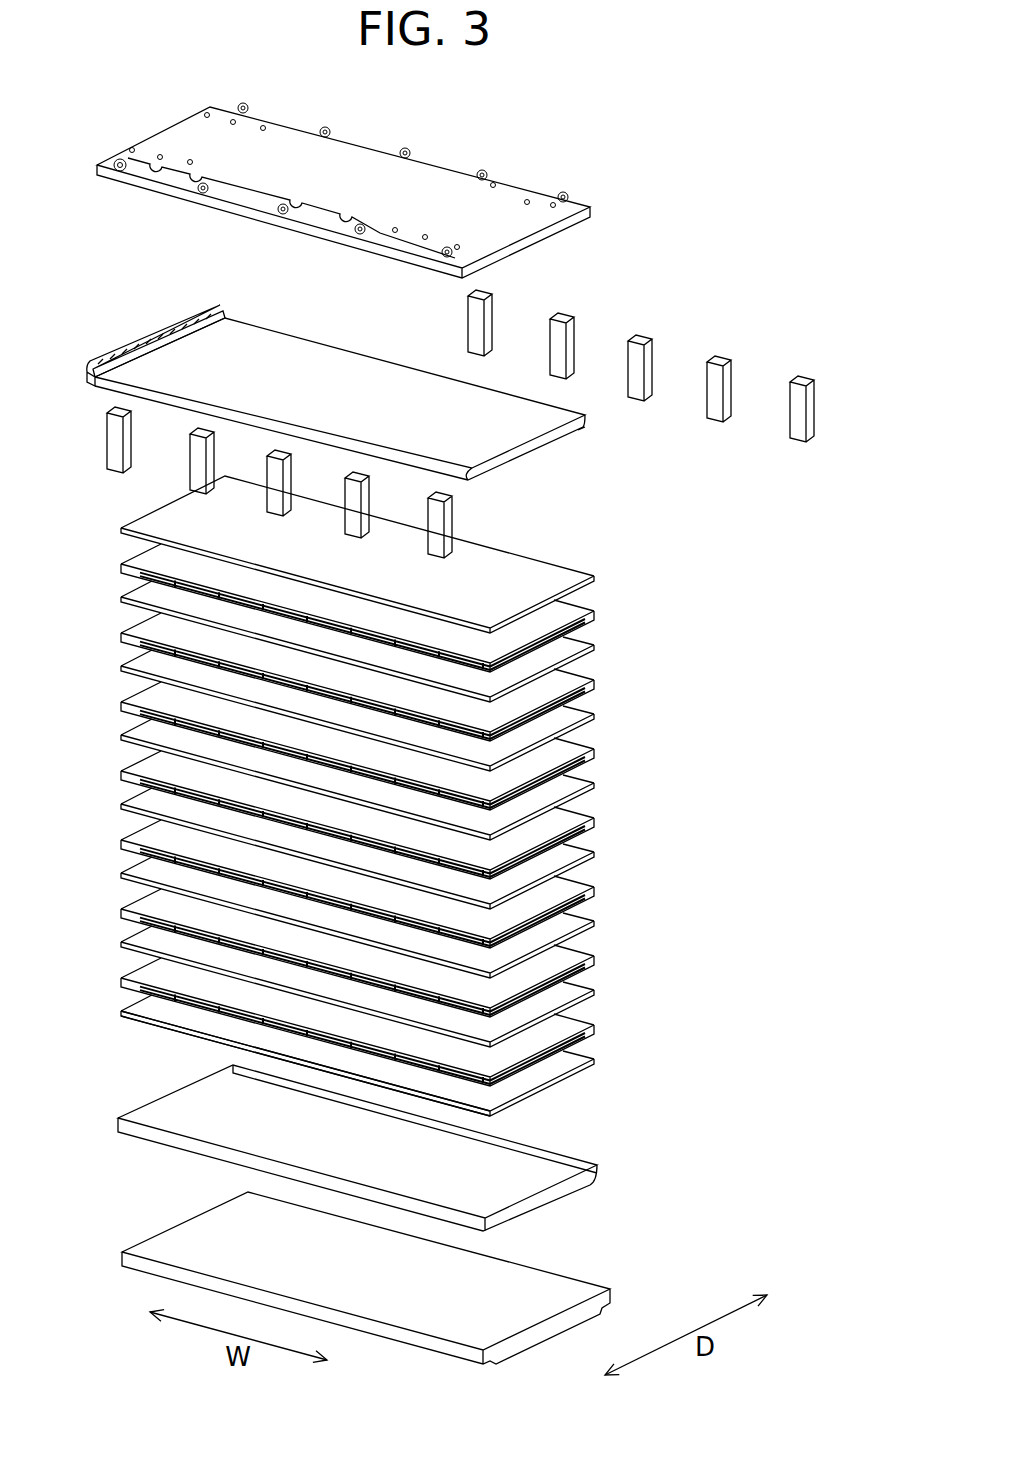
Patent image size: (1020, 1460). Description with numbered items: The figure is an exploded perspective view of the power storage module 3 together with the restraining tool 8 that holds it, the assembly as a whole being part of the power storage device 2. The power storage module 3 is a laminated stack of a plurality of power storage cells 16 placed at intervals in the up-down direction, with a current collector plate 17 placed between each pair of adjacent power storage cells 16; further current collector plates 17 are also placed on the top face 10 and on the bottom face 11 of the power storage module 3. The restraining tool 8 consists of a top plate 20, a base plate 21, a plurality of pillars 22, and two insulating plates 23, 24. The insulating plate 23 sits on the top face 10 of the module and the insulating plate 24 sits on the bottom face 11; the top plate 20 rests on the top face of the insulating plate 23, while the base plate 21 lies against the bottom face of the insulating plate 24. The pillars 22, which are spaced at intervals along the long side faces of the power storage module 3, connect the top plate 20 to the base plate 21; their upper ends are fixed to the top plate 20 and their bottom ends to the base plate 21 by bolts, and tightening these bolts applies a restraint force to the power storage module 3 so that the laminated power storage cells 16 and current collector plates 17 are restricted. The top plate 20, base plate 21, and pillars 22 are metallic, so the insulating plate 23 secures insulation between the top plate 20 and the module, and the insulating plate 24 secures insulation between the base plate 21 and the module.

The restraining tool 8 is at (134, 122).
The case 2 is at (535, 165).
The power storage module 3 is at (570, 527).
The top face 10 is at (514, 578).
The bottom face 11 is at (152, 1028).
The power storage cell 16 is at (598, 627).
The current collector plate 17 is at (598, 583).
The top plate 20 is at (592, 212).
The base plate 21 is at (614, 1300).
The pillar 22 is at (107, 437).
The insulating plate 23 is at (590, 424).
The insulating plate 24 is at (604, 1172).